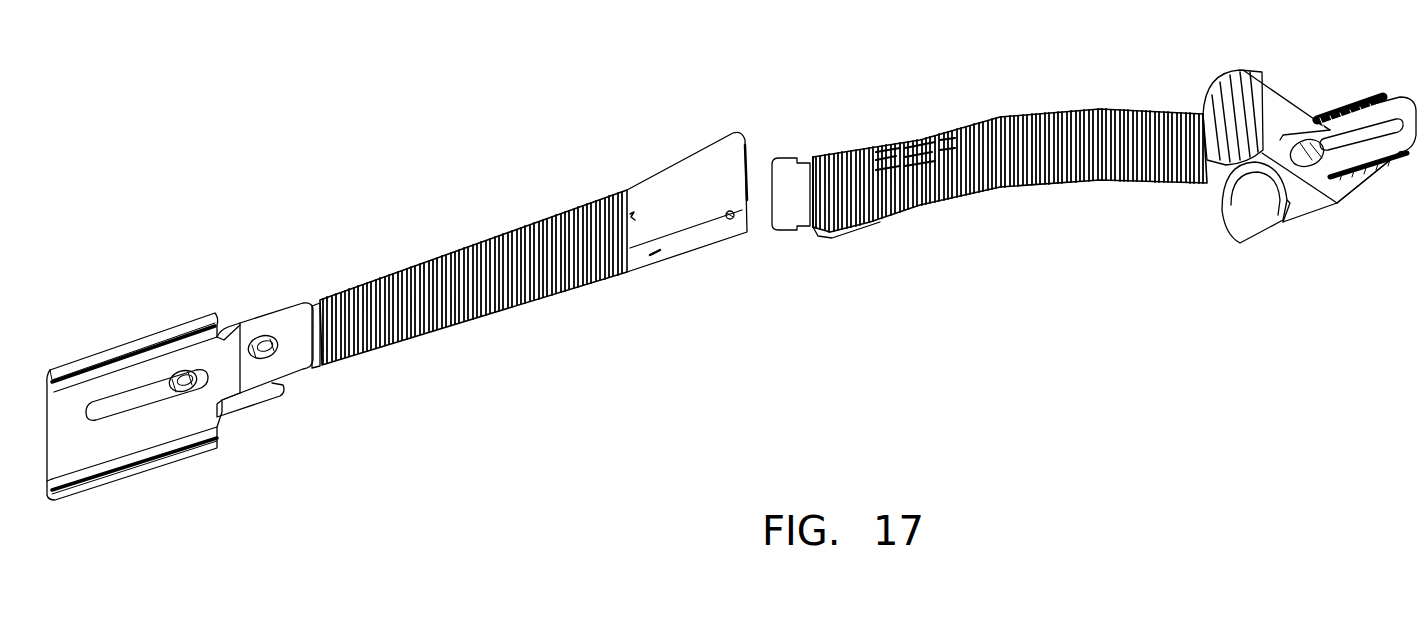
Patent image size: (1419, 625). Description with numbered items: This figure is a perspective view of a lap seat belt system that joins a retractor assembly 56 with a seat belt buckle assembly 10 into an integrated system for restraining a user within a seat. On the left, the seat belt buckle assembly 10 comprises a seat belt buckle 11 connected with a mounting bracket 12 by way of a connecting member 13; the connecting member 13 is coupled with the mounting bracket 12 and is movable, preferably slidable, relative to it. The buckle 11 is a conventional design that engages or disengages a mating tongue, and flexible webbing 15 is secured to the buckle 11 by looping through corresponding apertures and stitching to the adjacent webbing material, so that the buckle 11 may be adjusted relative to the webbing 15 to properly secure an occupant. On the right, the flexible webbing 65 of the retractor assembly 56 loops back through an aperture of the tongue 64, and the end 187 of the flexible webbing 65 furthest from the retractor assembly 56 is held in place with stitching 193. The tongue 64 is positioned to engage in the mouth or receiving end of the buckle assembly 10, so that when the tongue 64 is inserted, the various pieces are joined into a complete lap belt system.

The seat belt buckle assembly 10 is at (105, 348).
The seat belt buckle 11 is at (720, 143).
The mounting bracket 12 is at (142, 478).
The connecting member 13 is at (184, 318).
The flexible webbing 15 is at (457, 247).
The retractor assembly 56 is at (1287, 93).
The tongue 64 is at (806, 153).
The flexible webbing 65 is at (1060, 110).
The end of the flexible webbing 187 is at (873, 140).
The stitching 193 is at (937, 130).